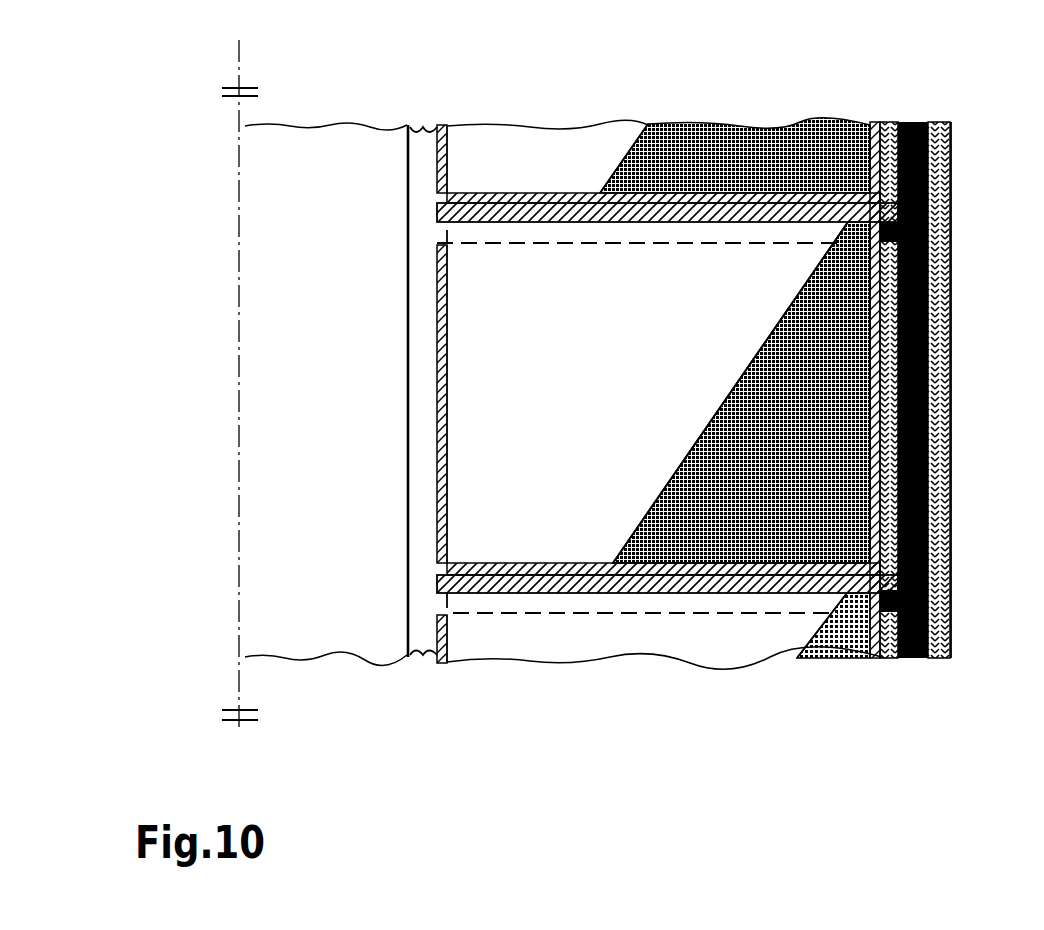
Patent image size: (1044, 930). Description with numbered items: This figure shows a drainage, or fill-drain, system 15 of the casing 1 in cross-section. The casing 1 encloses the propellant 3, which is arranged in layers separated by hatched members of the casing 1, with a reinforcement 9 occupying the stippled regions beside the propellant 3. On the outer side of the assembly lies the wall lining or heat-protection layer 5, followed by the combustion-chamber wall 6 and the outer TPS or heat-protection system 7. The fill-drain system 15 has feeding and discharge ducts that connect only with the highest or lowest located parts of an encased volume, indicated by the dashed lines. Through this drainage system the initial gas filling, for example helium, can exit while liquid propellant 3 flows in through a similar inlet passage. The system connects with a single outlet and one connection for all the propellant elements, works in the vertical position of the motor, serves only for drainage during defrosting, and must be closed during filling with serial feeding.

The casing 1 is at (440, 125).
The propellant 3 is at (647, 399).
The wall lining/heat-protection layer 5 is at (887, 122).
The combustion-chamber wall 6 is at (917, 658).
The TPS/heat-protection system 7 is at (940, 125).
The reinforcement 9 is at (735, 388).
The fill-drain 15 is at (405, 298).